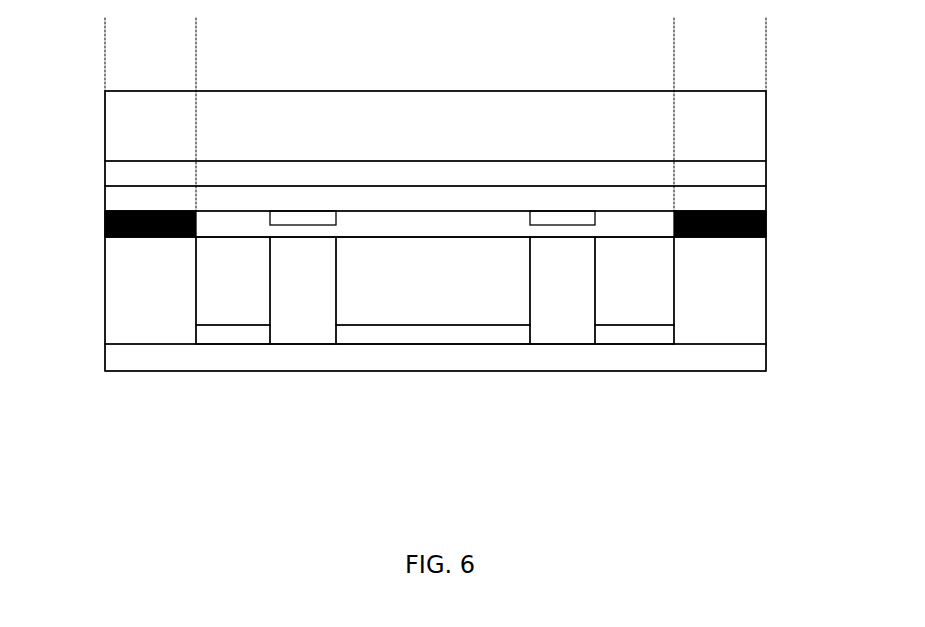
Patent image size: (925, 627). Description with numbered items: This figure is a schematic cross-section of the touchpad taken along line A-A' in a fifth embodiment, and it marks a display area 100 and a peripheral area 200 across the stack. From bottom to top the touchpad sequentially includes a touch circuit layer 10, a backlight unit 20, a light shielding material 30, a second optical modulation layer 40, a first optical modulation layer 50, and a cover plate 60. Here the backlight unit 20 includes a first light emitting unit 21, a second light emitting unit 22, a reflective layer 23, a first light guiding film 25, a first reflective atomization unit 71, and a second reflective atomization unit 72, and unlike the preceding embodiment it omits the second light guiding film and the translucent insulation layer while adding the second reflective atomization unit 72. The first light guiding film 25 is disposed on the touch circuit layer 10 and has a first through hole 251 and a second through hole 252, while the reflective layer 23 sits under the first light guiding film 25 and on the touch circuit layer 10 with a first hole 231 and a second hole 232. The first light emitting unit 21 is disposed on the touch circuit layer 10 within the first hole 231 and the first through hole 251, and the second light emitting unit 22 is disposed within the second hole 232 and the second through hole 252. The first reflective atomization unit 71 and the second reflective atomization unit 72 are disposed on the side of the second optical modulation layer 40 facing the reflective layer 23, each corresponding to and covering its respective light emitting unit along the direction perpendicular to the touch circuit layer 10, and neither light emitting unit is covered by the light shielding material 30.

The touch circuit layer 10 is at (105, 362).
The backlight unit 20 is at (472, 290).
The first light emitting unit 21 is at (320, 332).
The second light emitting unit 22 is at (578, 330).
The reflective layer 23 is at (646, 335).
The first hole 231 is at (268, 333).
The second hole 232 is at (528, 333).
The first light guiding film 25 is at (662, 292).
The first through hole 251 is at (268, 292).
The second through hole 252 is at (528, 292).
The light shielding material 30 is at (766, 225).
The second optical modulation layer 40 is at (105, 206).
The first optical modulation layer 50 is at (766, 175).
The cover plate 60 is at (105, 122).
The first reflective atomization unit 71 is at (303, 211).
The second reflective atomization unit 72 is at (562, 211).
The display area 100 is at (674, 32).
The peripheral area 200 is at (196, 55).